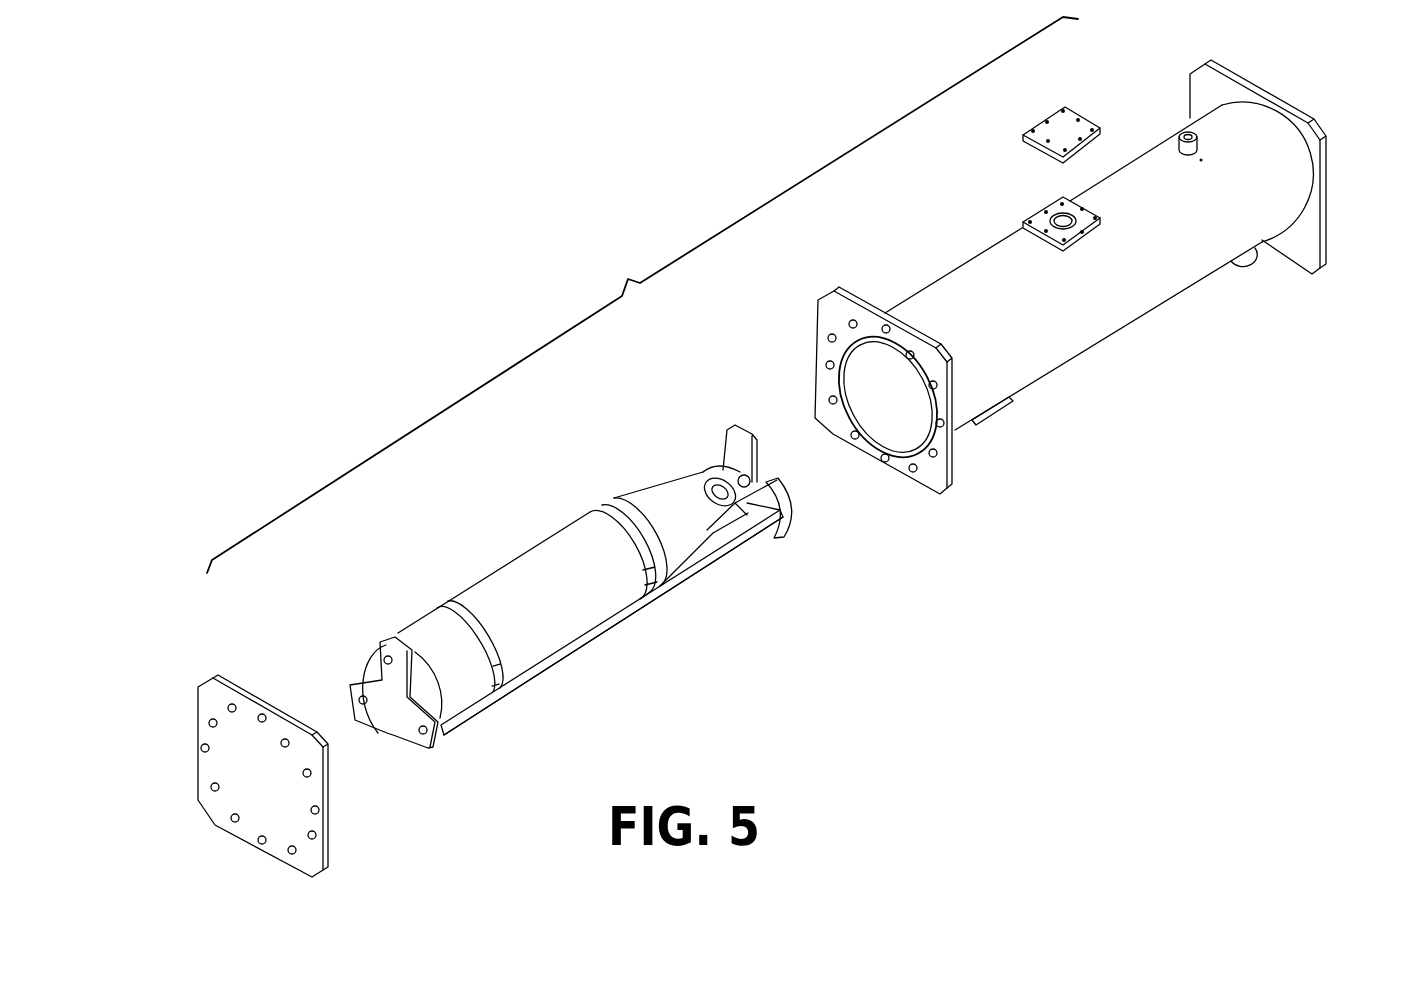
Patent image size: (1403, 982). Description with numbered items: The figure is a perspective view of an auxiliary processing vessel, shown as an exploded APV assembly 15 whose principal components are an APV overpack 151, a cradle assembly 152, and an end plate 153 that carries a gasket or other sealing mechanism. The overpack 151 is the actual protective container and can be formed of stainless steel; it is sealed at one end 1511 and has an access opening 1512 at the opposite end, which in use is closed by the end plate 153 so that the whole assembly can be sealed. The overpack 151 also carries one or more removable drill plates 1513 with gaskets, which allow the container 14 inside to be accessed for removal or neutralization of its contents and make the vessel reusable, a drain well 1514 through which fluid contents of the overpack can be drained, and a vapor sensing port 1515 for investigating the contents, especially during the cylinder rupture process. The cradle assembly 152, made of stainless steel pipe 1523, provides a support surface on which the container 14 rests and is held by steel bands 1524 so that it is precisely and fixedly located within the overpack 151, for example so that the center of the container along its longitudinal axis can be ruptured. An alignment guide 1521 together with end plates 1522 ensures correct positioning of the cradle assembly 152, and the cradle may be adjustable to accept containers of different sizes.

The container 14 is at (548, 535).
The APV assembly 15 is at (624, 262).
The APV overpack 151 is at (1120, 327).
The sealed end 1511 is at (1307, 112).
The access opening 1512 is at (816, 338).
The removable drill plate 1513 is at (1026, 132).
The drain well 1514 is at (1245, 258).
The vapor sensing port 1515 is at (1180, 135).
The cradle assembly 152 is at (723, 552).
The alignment guide 1521 is at (767, 487).
The end plate 1522 is at (723, 428).
The stainless steel pipe 1523 is at (562, 657).
The steel band 1524 is at (642, 603).
The end plate 153 is at (327, 793).